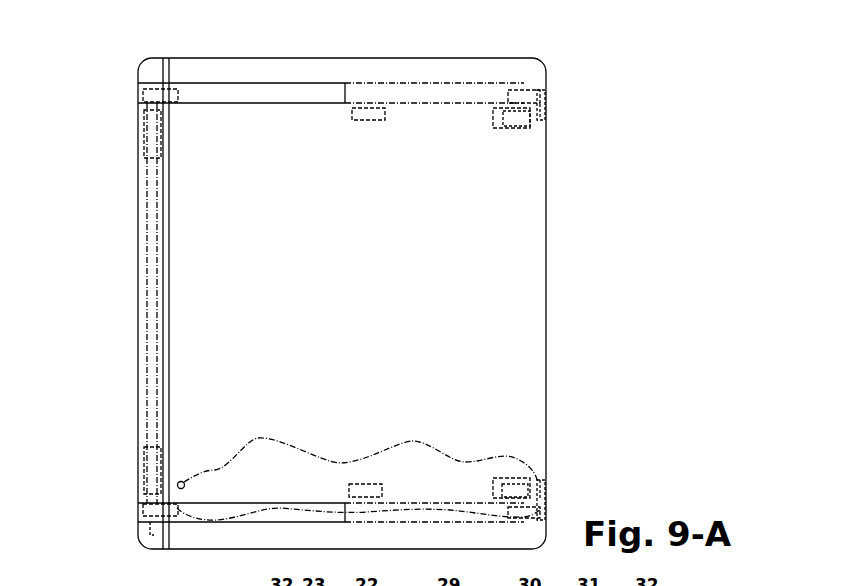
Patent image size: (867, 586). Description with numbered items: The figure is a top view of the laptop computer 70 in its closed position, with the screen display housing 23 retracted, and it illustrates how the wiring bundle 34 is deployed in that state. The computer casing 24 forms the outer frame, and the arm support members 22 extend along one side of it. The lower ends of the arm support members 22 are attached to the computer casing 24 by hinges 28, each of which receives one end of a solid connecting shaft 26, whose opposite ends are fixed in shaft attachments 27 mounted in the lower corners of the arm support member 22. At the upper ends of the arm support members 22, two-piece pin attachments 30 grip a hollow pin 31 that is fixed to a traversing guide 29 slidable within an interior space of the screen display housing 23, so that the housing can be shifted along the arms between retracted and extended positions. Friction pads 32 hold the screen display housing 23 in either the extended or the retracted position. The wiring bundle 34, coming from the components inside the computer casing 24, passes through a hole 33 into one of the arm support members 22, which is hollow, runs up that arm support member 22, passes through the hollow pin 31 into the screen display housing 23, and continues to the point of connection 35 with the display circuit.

The arm support member 22 is at (367, 583).
The screen display housing 23 is at (545, 337).
The computer casing 24 is at (138, 218).
The solid connecting shaft 26 is at (147, 298).
The shaft attachment 27 is at (162, 90).
The hinge 28 is at (144, 133).
The traversing guide 29 is at (543, 110).
The pin attachment 30 is at (527, 88).
The hollow pin 31 is at (542, 93).
The friction pad 32 is at (353, 109).
The hole 33 is at (150, 535).
The wiring bundle 34 is at (242, 514).
The point of connection 35 is at (178, 483).
The laptop computer 70 is at (570, 256).